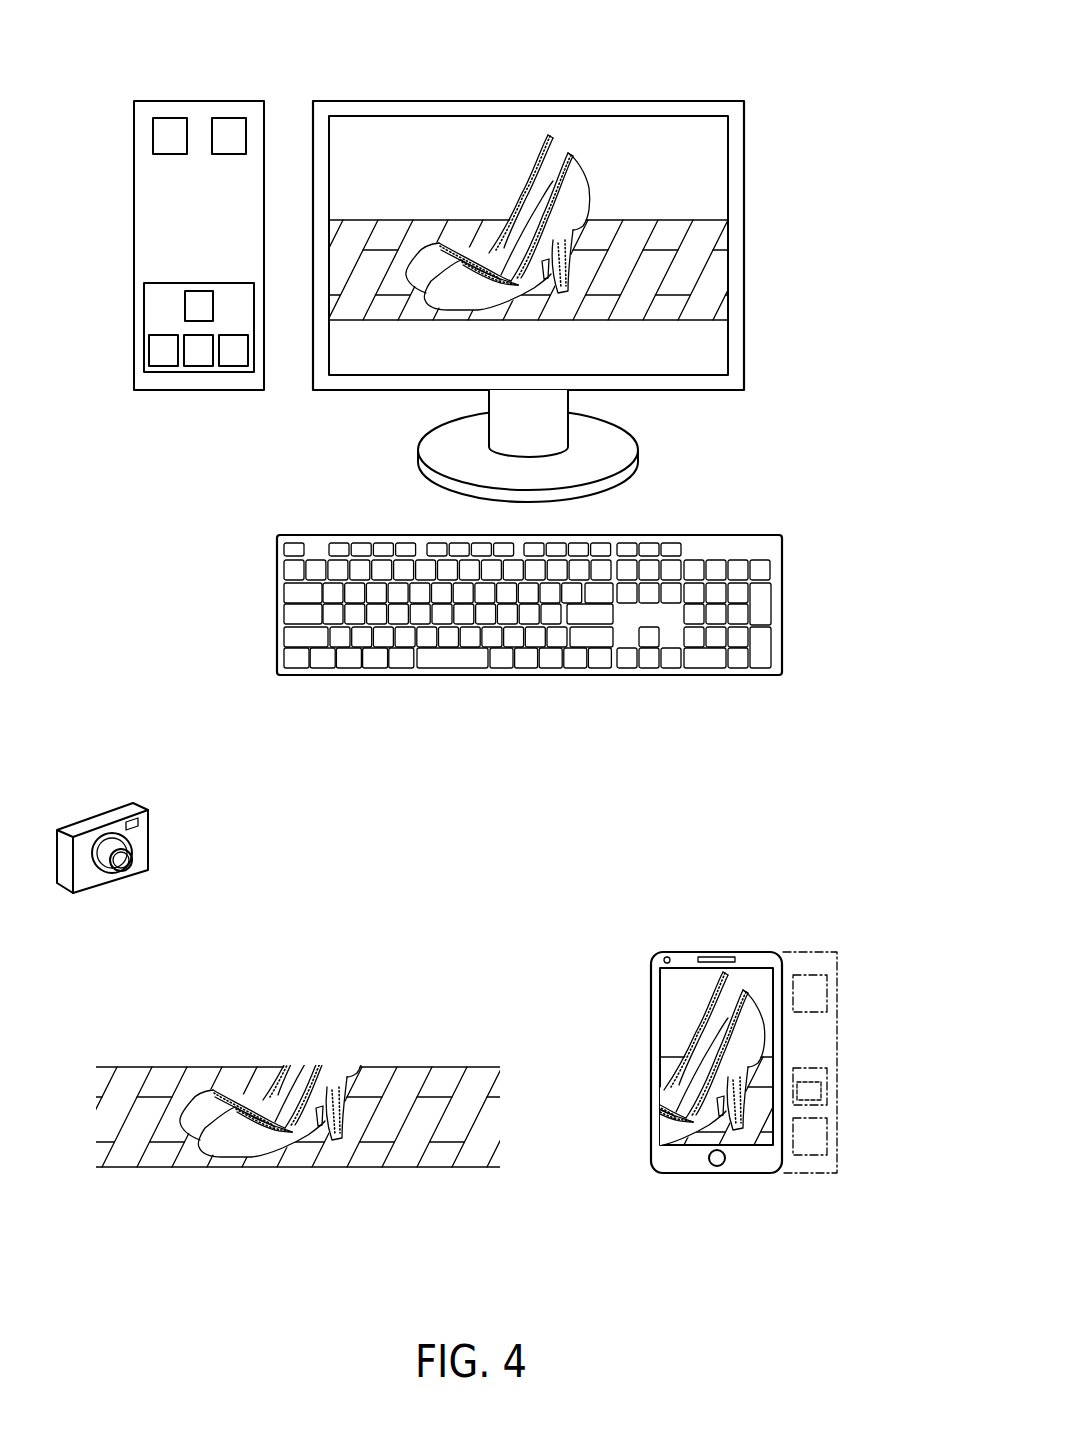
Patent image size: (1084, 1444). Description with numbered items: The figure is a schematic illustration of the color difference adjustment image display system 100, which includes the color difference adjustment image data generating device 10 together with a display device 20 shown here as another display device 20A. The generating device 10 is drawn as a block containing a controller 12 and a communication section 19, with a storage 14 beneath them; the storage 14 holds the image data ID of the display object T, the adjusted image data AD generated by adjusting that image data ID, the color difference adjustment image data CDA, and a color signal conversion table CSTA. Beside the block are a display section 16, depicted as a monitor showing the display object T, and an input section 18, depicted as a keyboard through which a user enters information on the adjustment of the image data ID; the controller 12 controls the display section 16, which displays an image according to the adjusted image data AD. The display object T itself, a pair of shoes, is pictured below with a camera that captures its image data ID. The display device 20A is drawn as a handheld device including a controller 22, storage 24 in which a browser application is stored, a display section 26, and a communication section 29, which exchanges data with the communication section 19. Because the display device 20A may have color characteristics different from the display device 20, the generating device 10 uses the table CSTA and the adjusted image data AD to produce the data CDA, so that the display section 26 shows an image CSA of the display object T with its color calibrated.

The color difference adjustment image display system 100 is at (825, 72).
The color difference adjustment image data generating device 10 is at (690, 77).
The controller 12 is at (175, 118).
The communication section 19 is at (232, 118).
The storage 14 is at (144, 330).
The color signal conversion table CSTA is at (185, 305).
The image data ID is at (162, 367).
The adjusted image data AD is at (198, 367).
The color difference adjustment image data CDA is at (233, 367).
The display section 16 is at (745, 178).
The input section 18 is at (783, 551).
The display object T is at (253, 1142).
The display device 20A is at (857, 917).
The display device 20 is at (837, 1030).
The controller 22 is at (827, 990).
The storage 24 is at (827, 1073).
The display section 26 is at (743, 957).
The communication section 29 is at (827, 1145).
The image CSA is at (681, 1035).